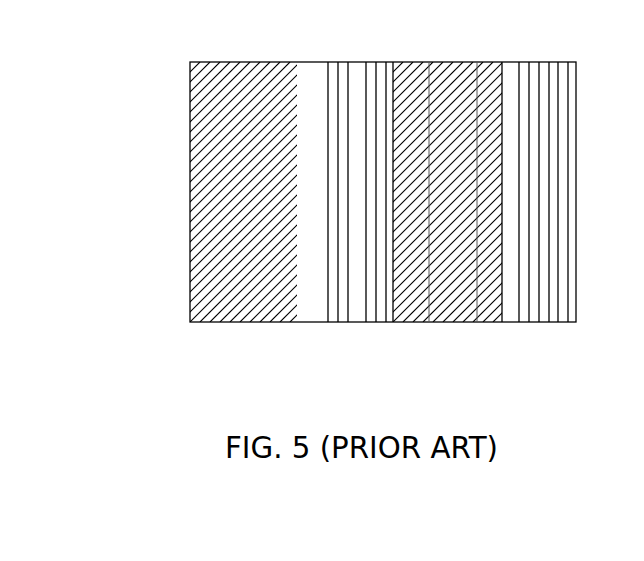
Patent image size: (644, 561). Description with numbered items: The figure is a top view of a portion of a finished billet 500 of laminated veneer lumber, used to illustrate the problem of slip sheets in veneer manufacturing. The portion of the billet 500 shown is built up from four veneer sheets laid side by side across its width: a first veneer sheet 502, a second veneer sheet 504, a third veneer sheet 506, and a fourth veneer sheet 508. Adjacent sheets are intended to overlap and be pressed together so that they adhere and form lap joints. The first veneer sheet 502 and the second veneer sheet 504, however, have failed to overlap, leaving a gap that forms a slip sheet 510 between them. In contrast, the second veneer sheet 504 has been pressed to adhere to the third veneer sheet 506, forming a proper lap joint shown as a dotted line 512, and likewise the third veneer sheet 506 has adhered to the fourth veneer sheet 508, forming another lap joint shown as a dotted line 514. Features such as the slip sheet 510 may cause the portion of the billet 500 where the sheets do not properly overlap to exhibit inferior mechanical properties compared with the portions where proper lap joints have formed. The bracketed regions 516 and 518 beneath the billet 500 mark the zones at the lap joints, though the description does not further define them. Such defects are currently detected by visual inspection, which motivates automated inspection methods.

The billet 500 is at (173, 74).
The first veneer sheet 502 is at (192, 300).
The second veneer sheet 504 is at (371, 85).
The third veneer sheet 506 is at (457, 82).
The fourth veneer sheet 508 is at (545, 273).
The slip sheet 510 is at (297, 327).
The lap joint 512 is at (431, 186).
The lap joint 514 is at (497, 150).
The second line group 516 is at (400, 327).
The third line group 518 is at (472, 327).